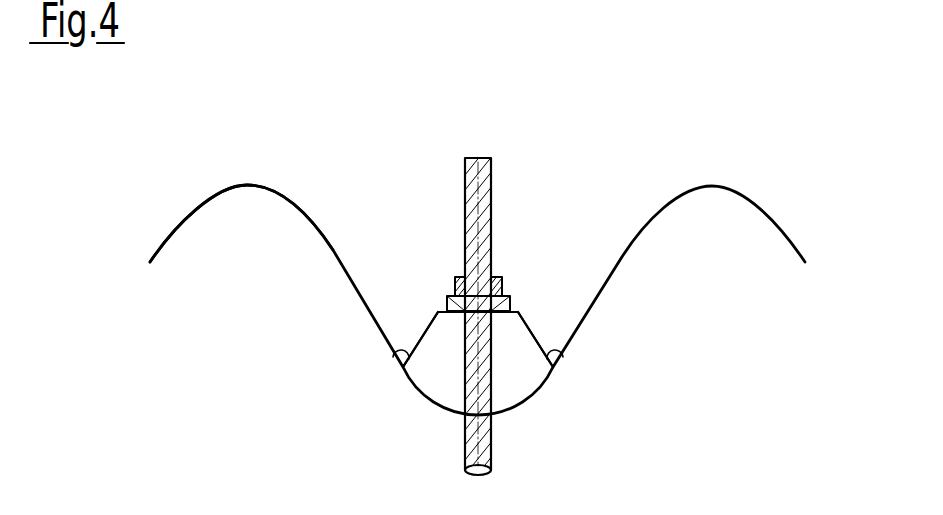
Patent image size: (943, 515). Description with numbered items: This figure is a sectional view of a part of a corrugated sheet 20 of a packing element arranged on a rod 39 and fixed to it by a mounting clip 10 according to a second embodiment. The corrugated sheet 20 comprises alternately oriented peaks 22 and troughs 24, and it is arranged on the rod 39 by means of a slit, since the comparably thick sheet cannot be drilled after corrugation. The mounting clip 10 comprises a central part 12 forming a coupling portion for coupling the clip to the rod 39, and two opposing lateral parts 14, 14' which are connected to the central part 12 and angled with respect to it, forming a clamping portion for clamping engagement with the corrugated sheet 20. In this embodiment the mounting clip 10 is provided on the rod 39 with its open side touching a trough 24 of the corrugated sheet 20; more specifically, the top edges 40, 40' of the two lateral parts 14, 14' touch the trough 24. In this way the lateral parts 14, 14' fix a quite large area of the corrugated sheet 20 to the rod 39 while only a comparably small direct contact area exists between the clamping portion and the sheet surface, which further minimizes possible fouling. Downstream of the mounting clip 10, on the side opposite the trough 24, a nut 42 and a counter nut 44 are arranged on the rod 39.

The mounting clip 10 is at (410, 241).
The central part 12 is at (518, 310).
The lateral part 14 is at (597, 323).
The lateral part 14' is at (347, 347).
The corrugated sheet 20 is at (737, 169).
The peak 22 is at (250, 185).
The trough 24 is at (490, 419).
The rod 39 is at (488, 202).
The top edge 40 is at (612, 345).
The top edge 40' is at (333, 387).
The nut 42 is at (447, 302).
The counter nut 44 is at (456, 280).